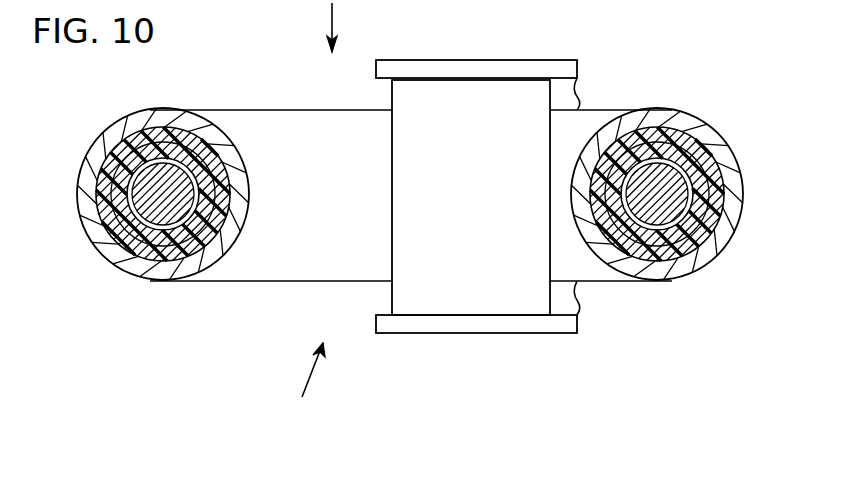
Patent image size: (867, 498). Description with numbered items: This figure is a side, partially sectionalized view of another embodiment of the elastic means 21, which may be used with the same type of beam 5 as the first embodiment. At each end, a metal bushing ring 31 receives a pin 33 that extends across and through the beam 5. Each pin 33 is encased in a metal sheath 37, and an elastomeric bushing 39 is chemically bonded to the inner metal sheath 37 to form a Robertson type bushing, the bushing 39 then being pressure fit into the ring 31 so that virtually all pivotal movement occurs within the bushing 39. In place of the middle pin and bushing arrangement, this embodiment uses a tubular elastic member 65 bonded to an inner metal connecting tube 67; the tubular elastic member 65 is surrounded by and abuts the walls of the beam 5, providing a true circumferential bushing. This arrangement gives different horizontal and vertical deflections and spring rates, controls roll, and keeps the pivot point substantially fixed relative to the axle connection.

The beam 5 is at (384, 70).
The elastic means 21 is at (303, 384).
The metal bushing ring 31 is at (147, 120).
The pin 33 is at (162, 210).
The metal sheath 37 is at (170, 157).
The elastomeric bushing 39 is at (202, 153).
The tubular elastic member 65 is at (487, 214).
The inner metal connecting tube 67 is at (330, 187).